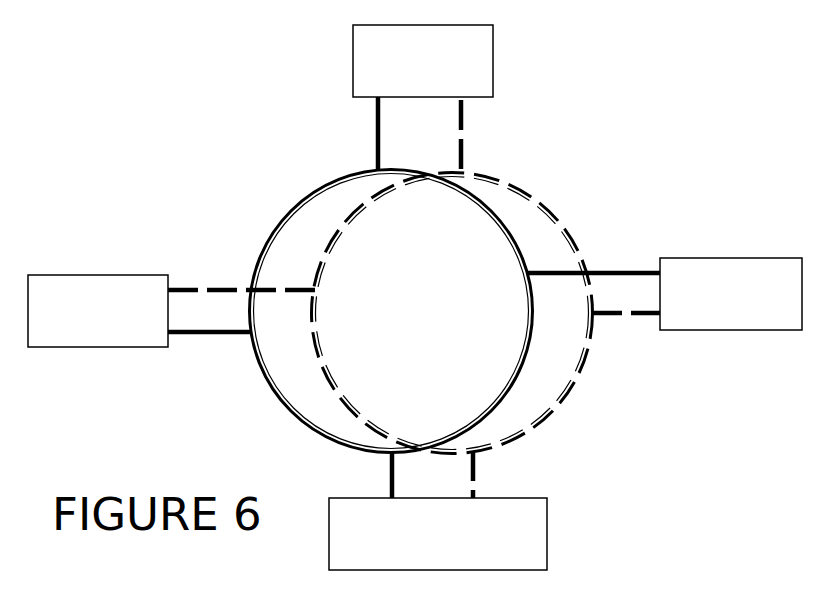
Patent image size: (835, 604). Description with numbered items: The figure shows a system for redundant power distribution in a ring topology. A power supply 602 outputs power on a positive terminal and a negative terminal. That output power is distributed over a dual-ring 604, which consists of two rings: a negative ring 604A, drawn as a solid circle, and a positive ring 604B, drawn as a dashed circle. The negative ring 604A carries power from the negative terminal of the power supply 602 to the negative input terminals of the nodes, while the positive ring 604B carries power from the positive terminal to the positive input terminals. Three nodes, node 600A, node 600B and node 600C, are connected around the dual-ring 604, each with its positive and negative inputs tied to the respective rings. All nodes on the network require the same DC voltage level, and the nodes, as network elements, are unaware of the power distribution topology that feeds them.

The node 600A is at (171, 311).
The node 600B is at (423, 99).
The node 600C is at (664, 294).
The power supply 602 is at (438, 510).
The dual-ring 604 is at (524, 158).
The negative ring 604A is at (493, 210).
The positive ring 604B is at (550, 210).